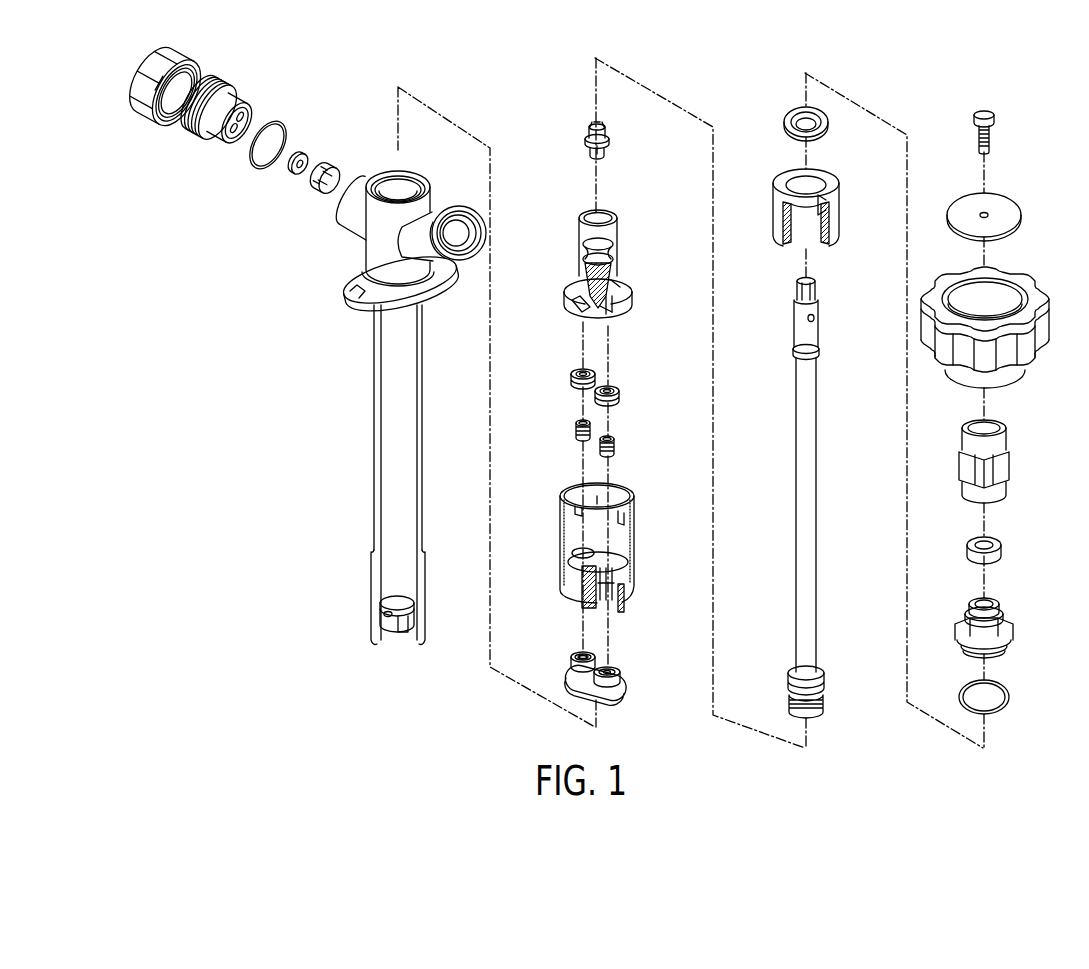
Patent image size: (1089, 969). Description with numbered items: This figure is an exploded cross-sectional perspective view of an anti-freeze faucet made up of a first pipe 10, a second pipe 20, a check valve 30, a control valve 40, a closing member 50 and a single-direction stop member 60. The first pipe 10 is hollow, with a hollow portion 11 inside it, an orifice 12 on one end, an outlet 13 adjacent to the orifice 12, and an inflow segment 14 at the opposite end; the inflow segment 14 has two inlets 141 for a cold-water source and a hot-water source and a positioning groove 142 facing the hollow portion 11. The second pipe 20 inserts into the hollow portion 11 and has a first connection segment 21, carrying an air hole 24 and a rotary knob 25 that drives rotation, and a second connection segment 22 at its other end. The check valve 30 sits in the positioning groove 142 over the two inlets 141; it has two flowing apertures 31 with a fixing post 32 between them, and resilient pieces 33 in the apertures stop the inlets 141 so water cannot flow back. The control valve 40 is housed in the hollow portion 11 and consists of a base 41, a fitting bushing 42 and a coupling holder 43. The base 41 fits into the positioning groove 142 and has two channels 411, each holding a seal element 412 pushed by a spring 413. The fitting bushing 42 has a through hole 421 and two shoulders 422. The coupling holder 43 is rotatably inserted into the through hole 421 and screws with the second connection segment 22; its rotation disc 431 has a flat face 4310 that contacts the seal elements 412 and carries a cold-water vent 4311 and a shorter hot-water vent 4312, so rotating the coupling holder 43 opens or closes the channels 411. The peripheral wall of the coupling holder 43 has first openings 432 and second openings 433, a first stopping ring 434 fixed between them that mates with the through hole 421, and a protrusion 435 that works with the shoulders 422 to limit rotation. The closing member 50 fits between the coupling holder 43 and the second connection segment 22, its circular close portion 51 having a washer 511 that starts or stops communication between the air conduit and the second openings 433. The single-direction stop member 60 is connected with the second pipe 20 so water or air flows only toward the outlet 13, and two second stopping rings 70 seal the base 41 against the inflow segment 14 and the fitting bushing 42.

The first pipe 10 is at (368, 394).
The hollow portion 11 is at (402, 450).
The orifice 12 is at (392, 196).
The outlet 13 is at (458, 234).
The inflow segment 14 is at (412, 605).
The inlets 141 is at (403, 632).
The positioning groove 142 is at (386, 612).
The second pipe 20 is at (817, 465).
The first connection segment 21 is at (816, 289).
The second connection segment 22 is at (822, 699).
The air hole 24 is at (814, 318).
The rotary knob 25 is at (1032, 300).
The check valve 30 is at (625, 667).
The flowing apertures 31 is at (622, 681).
The fixing post 32 is at (580, 653).
The resilient pieces 33 is at (573, 657).
The control valve 40 is at (637, 495).
The base 41 is at (630, 553).
The channels 411 is at (608, 598).
The seal element 412 is at (572, 375).
The spring 413 is at (574, 431).
The fitting bushing 42 is at (839, 185).
The through hole 421 is at (816, 180).
The shoulders 422 is at (828, 212).
The coupling holder 43 is at (614, 226).
The rotation disc 431 is at (632, 301).
The flat face 4310 is at (612, 309).
The cold-water vent 4311 is at (578, 302).
The hot-water vent 4312 is at (621, 288).
The first openings 432 is at (586, 276).
The second openings 433 is at (586, 248).
The first stopping ring 434 is at (582, 259).
The protrusion 435 is at (617, 280).
The closing member 50 is at (622, 143).
The circular close portion 51 is at (585, 142).
The washer 511 is at (588, 134).
The single-direction stop member 60 is at (780, 112).
The second stopping rings 70 is at (575, 603).